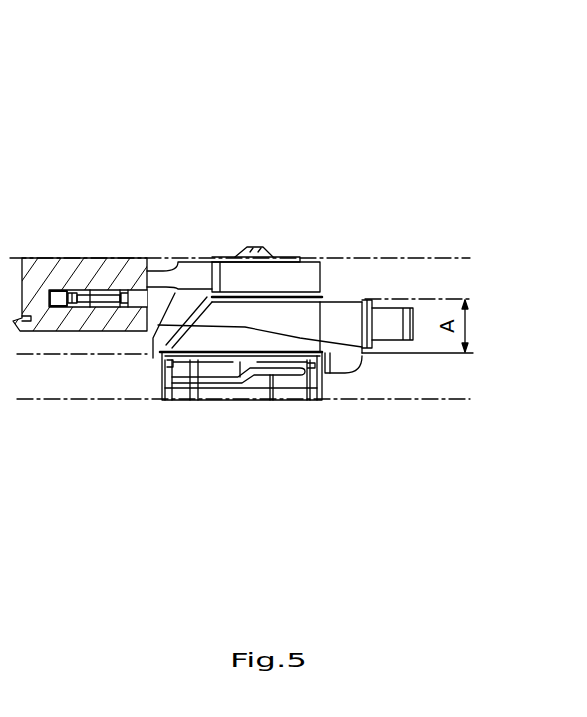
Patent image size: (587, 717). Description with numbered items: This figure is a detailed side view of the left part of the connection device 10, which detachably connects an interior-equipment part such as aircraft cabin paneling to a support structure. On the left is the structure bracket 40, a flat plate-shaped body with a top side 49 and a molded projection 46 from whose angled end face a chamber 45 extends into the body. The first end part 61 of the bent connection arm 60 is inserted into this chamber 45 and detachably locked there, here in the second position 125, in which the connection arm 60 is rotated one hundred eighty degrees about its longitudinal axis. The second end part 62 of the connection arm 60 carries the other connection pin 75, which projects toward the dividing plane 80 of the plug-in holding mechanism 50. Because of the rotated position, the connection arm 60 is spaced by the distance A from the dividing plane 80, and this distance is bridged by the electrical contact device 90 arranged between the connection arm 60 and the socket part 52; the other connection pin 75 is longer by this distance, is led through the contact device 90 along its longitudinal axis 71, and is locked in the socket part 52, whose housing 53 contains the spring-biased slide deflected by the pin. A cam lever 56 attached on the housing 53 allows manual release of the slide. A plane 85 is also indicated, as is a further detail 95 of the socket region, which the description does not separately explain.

The connection device 10 is at (236, 336).
The structure bracket 40 is at (29, 245).
The chamber 45 is at (57, 302).
The projection 46 is at (87, 272).
The top side 49 is at (69, 275).
The plug-in holding mechanism 50 is at (148, 397).
The socket part 52 is at (192, 392).
The housing 53 is at (267, 398).
The cam lever 56 is at (232, 393).
The connection arm 60 is at (170, 254).
The first end part 61 is at (104, 300).
The second end part 62 is at (277, 283).
The longitudinal axis 71 is at (257, 395).
The other connection pin 75 is at (258, 250).
The dividing plane 80 is at (385, 357).
The plane 85 is at (395, 262).
The electrical contact device 90 is at (330, 281).
The side wall 95 is at (305, 400).
The second position rotated by 180° 125 is at (199, 212).